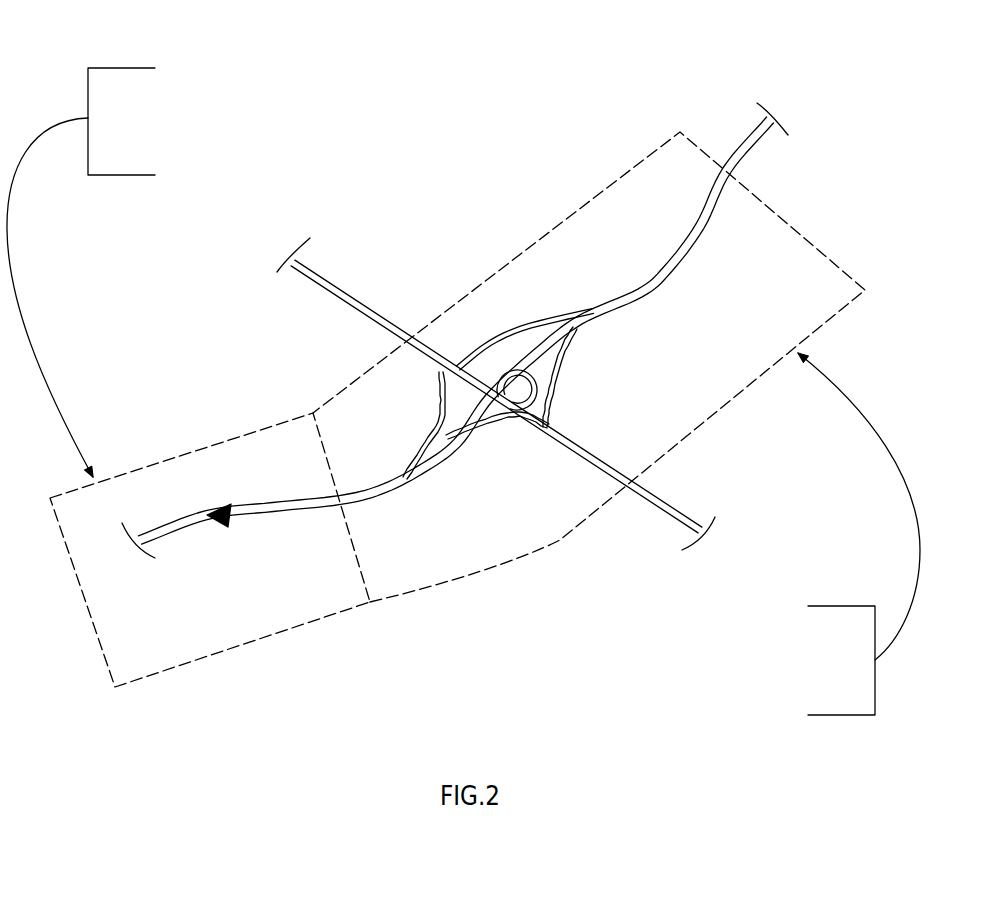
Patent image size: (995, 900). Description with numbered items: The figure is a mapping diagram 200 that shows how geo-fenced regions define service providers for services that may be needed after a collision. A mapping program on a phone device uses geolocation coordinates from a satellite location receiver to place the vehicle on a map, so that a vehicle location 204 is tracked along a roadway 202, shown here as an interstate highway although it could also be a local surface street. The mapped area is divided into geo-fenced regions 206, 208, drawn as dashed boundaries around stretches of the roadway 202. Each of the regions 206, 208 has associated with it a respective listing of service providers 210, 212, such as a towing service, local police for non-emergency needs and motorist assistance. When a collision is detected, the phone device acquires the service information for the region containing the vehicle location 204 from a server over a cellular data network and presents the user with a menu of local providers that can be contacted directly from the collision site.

The mapping diagram 200 is at (868, 44).
The roadway 202 is at (290, 512).
The vehicle location 204 is at (222, 520).
The geo-fenced region 206 is at (217, 445).
The geo-fenced region 208 is at (547, 237).
The listing of service providers 210 is at (115, 176).
The listing of service providers 212 is at (843, 606).